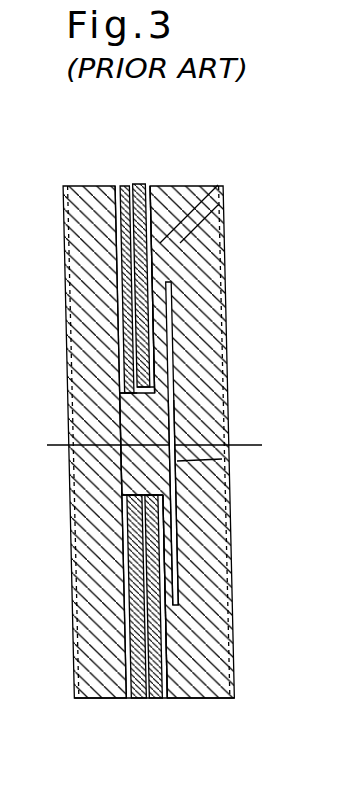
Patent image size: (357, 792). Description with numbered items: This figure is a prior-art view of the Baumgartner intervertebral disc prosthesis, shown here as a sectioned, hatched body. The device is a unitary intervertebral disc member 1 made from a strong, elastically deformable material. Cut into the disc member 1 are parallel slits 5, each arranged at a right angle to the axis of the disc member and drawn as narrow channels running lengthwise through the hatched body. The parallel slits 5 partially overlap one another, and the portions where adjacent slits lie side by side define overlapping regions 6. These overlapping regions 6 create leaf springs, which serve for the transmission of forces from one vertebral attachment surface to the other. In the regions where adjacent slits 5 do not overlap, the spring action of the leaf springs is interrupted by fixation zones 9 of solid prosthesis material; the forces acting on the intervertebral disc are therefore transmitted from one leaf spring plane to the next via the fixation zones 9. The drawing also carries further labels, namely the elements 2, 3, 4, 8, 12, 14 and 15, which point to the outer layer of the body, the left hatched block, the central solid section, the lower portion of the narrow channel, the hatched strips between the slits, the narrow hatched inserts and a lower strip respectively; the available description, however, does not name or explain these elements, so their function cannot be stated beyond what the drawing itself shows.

The intervertebral disc member 1 is at (222, 233).
The outer coating 2 is at (222, 205).
The carrier block 3 is at (63, 220).
The center section 4 is at (262, 445).
The parallel slits 5 is at (155, 187).
The overlapping regions 6 is at (166, 318).
The bore 8 is at (172, 417).
The fixation zones 9 is at (202, 183).
The conductor strip 12 is at (158, 330).
The electrode layer 14 is at (123, 185).
The lower electrode strip 15 is at (153, 618).